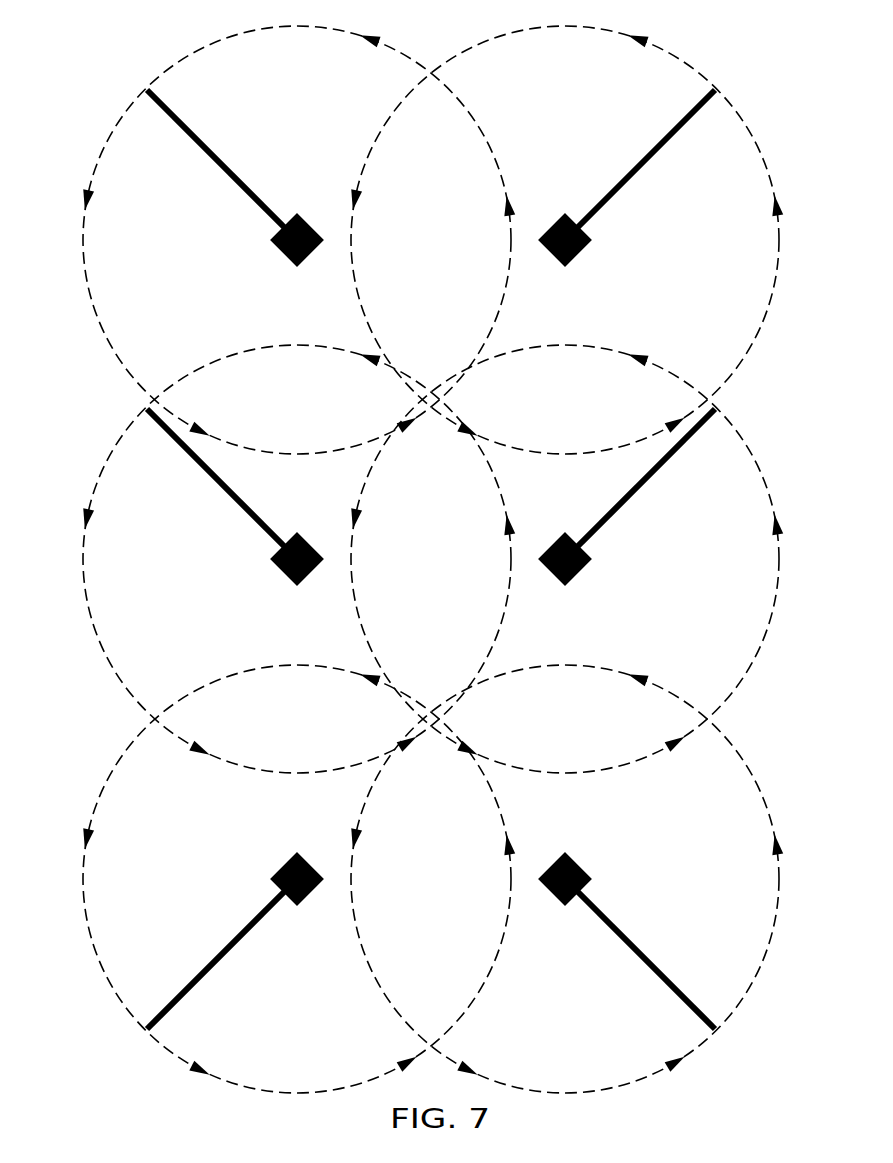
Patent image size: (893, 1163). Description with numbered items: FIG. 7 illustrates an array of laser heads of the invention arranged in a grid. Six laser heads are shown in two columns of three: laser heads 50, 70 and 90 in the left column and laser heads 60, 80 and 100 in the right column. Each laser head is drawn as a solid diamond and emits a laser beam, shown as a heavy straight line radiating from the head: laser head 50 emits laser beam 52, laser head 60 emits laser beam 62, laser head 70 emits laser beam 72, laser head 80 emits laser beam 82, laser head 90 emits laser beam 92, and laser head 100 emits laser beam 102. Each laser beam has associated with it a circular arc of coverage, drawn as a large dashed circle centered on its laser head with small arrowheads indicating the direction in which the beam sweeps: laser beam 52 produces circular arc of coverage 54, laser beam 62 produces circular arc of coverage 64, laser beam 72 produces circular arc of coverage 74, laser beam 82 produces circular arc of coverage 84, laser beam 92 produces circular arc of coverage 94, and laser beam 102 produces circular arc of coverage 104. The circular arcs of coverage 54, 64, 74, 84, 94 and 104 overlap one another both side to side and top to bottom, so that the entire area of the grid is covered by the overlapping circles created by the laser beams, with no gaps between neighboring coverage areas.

The laser head 50 is at (268, 243).
The laser beam 52 is at (227, 160).
The circular arc of coverage 54 is at (118, 125).
The laser head 60 is at (555, 218).
The laser beam 62 is at (597, 208).
The circular arc of coverage 64 is at (755, 126).
The laser head 70 is at (280, 572).
The laser beam 72 is at (230, 497).
The circular arc of coverage 74 is at (94, 495).
The laser head 80 is at (582, 572).
The laser beam 82 is at (647, 488).
The circular arc of coverage 84 is at (765, 476).
The laser head 90 is at (284, 872).
The laser beam 92 is at (222, 950).
The circular arc of coverage 94 is at (100, 805).
The laser head 100 is at (580, 868).
The laser beam 102 is at (645, 952).
The circular arc of coverage 104 is at (780, 815).